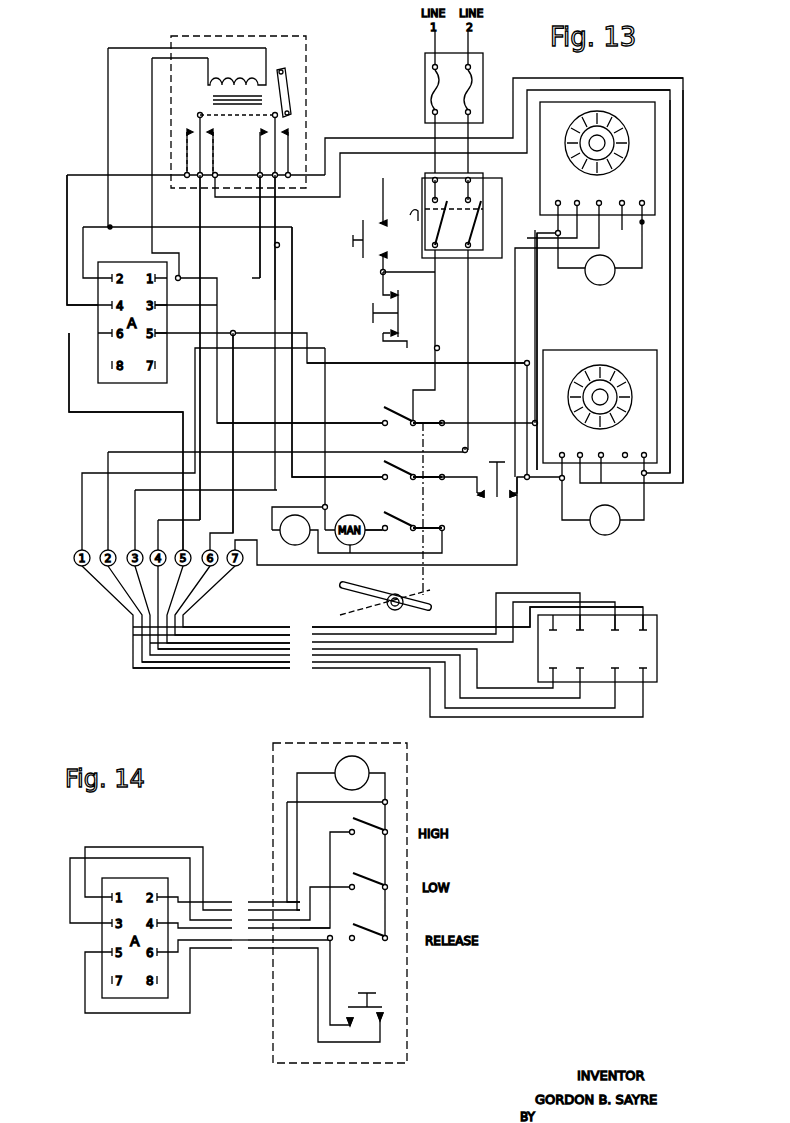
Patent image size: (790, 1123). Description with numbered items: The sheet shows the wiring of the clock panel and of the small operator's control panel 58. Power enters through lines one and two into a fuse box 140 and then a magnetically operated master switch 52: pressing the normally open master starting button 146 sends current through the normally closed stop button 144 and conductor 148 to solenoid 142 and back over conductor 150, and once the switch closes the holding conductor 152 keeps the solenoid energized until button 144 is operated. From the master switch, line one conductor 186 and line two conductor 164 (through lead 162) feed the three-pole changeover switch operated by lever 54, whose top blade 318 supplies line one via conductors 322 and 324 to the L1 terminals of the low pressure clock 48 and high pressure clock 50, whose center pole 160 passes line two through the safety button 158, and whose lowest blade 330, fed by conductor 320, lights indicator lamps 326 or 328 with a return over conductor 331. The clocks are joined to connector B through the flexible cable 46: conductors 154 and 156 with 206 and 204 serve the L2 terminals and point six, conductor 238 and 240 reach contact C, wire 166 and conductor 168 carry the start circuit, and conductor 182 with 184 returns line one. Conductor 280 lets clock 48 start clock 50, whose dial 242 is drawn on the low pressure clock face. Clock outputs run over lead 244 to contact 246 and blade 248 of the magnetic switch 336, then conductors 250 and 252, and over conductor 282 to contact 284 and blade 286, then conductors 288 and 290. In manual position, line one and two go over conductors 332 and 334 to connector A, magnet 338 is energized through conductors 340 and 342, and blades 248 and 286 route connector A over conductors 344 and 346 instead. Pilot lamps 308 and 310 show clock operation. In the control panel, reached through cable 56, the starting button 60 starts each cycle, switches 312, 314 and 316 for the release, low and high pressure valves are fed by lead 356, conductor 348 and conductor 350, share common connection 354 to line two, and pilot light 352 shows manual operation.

In FIG. 13, the flexible cable 46 is at (338, 673).
In FIG. 13, the low pressure timing clock 48 is at (640, 176).
In FIG. 13, the high pressure clock 50 is at (648, 409).
In FIG. 13, the master switch 52 is at (458, 236).
In FIG. 13, the switch lever 54 is at (432, 598).
In FIG. 14, the flexible cable 56 is at (238, 892).
In FIG. 14, the control panel 58 is at (393, 1063).
In FIG. 14, the starting button 60 is at (374, 1003).
In FIG. 13, the fuse box 140 is at (425, 78).
In FIG. 13, the solenoid 142 is at (414, 210).
In FIG. 13, the stop button 144 is at (400, 313).
In FIG. 13, the master starting button 146 is at (358, 230).
In FIG. 13, the conductor 148 is at (404, 287).
In FIG. 13, the conductor 150 is at (489, 259).
In FIG. 13, the conductor 152 is at (390, 270).
In FIG. 13, the conductor 154 is at (380, 363).
In FIG. 13, the conductor 156 is at (527, 382).
In FIG. 13, the safety button 158 is at (485, 500).
In FIG. 13, the switch pole 160 is at (432, 480).
In FIG. 13, the lead 162 is at (432, 462).
In FIG. 13, the line 2 conductor 164 is at (468, 334).
In FIG. 13, the wire 166 is at (95, 412).
In FIG. 13, the conductor 168 is at (247, 640).
In FIG. 13, the conductor 182 is at (478, 720).
In FIG. 13, the conductor 184 is at (133, 478).
In FIG. 13, the line 1 conductor 186 is at (436, 334).
In FIG. 13, the conductor 204 is at (485, 626).
In FIG. 13, the conductor 206 is at (233, 522).
In FIG. 13, the conductor 238 is at (445, 627).
In FIG. 13, the conductor 240 is at (497, 565).
In FIG. 13, the low control dial 242 is at (626, 143).
In FIG. 13, the lead 244 is at (619, 90).
In FIG. 13, the switch contact 246 is at (289, 131).
In FIG. 13, the switch blade 248 is at (278, 145).
In FIG. 13, the conductor 250 is at (277, 295).
In FIG. 13, the conductor 252 is at (197, 658).
In FIG. 13, the conductor 280 is at (671, 318).
In FIG. 13, the conductor 282 is at (684, 270).
In FIG. 13, the switch contact 284 is at (207, 131).
In FIG. 13, the switch blade 286 is at (198, 145).
In FIG. 13, the conductor 288 is at (200, 252).
In FIG. 13, the conductor 290 is at (240, 650).
In FIG. 13, the pilot lamp 308 is at (612, 281).
In FIG. 13, the pilot lamp 310 is at (617, 532).
In FIG. 14, the release switch 312 is at (358, 941).
In FIG. 14, the switch 314 is at (369, 890).
In FIG. 14, the switch 316 is at (369, 835).
In FIG. 13, the top switch blade 318 is at (418, 421).
In FIG. 13, the conductor 320 is at (412, 490).
In FIG. 13, the conductor 322 is at (487, 423).
In FIG. 13, the conductor 324 is at (538, 318).
In FIG. 13, the indicator lamp 326 is at (290, 544).
In FIG. 13, the indicator lamp 328 is at (382, 534).
In FIG. 13, the switch blade 330 is at (447, 524).
In FIG. 13, the conductor 331 is at (328, 507).
In FIG. 13, the conductor 332 is at (255, 416).
In FIG. 13, the conductor 334 is at (292, 322).
In FIG. 13, the magnetic switch 336 is at (278, 60).
In FIG. 13, the magnet 338 is at (233, 80).
In FIG. 13, the conductor 340 is at (153, 104).
In FIG. 13, the conductor 342 is at (108, 150).
In FIG. 13, the conductor 344 is at (260, 278).
In FIG. 13, the conductor 346 is at (67, 257).
In FIG. 14, the conductor 348 is at (163, 857).
In FIG. 14, the conductor 350 is at (295, 930).
In FIG. 14, the pilot light 352 is at (362, 758).
In FIG. 14, the common connection 354 is at (388, 800).
In FIG. 14, the lead 356 is at (213, 942).